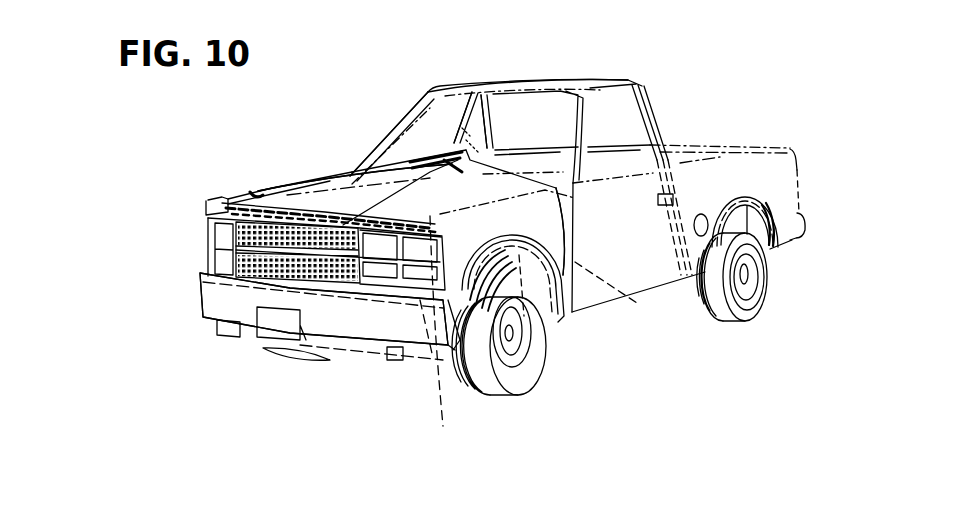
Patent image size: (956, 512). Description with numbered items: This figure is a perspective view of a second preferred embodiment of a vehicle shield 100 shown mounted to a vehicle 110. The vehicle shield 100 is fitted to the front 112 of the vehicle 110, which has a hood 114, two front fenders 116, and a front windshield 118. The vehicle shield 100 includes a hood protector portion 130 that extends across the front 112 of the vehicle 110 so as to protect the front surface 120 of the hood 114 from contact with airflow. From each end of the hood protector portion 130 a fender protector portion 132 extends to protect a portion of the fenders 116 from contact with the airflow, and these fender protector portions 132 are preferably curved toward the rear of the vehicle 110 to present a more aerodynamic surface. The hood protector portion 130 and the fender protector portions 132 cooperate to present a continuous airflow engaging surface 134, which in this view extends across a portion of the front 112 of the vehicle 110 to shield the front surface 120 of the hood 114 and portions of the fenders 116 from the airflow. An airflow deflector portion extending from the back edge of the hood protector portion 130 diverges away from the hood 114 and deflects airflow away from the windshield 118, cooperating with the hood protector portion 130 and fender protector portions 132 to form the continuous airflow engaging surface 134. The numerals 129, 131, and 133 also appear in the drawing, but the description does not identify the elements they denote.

The vehicle shield 100 is at (212, 127).
The vehicle 110 is at (553, 79).
The front 112 is at (192, 281).
The hood 114 is at (345, 178).
The front fenders 116 is at (205, 229).
The front windshield 118 is at (412, 106).
The front surface 120 is at (253, 188).
The hood hinge axis 129 is at (434, 206).
The hood protector portion 130 is at (280, 257).
The pivot line 131 is at (443, 426).
The fender protector portion 132 is at (420, 216).
The fender lower edge 133 is at (456, 370).
The airflow engaging surface 134 is at (346, 216).